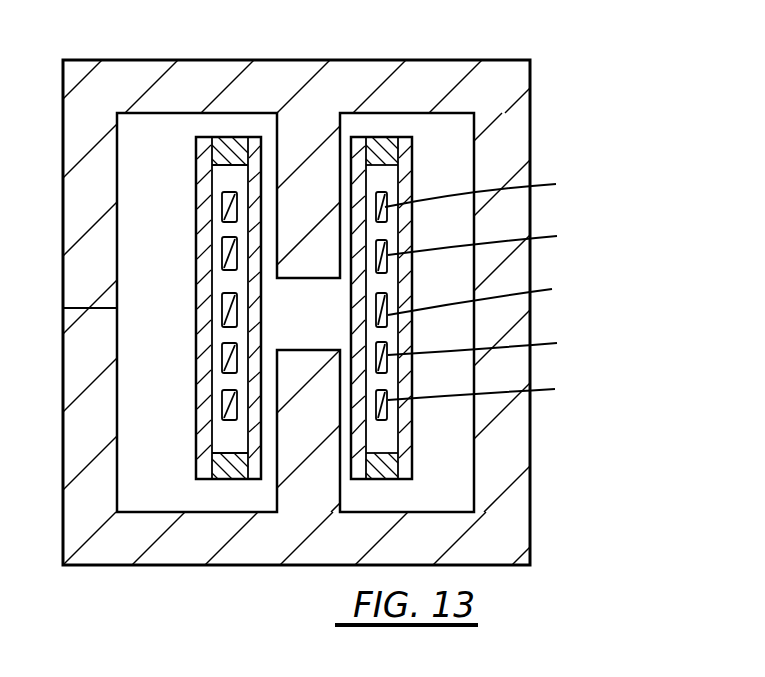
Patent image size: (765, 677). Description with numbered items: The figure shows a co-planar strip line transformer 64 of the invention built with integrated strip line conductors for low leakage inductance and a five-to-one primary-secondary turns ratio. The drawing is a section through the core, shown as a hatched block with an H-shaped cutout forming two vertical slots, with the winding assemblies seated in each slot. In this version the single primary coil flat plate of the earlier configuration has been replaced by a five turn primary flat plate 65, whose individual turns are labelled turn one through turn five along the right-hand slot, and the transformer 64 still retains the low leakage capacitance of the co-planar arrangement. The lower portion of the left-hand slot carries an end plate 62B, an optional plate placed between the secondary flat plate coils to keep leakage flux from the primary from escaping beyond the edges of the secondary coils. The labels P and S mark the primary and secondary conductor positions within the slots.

The 5:1 turns ratio transformer 64 is at (548, 80).
The five turn primary flat plate 65 is at (383, 195).
The end plate 62B is at (230, 480).